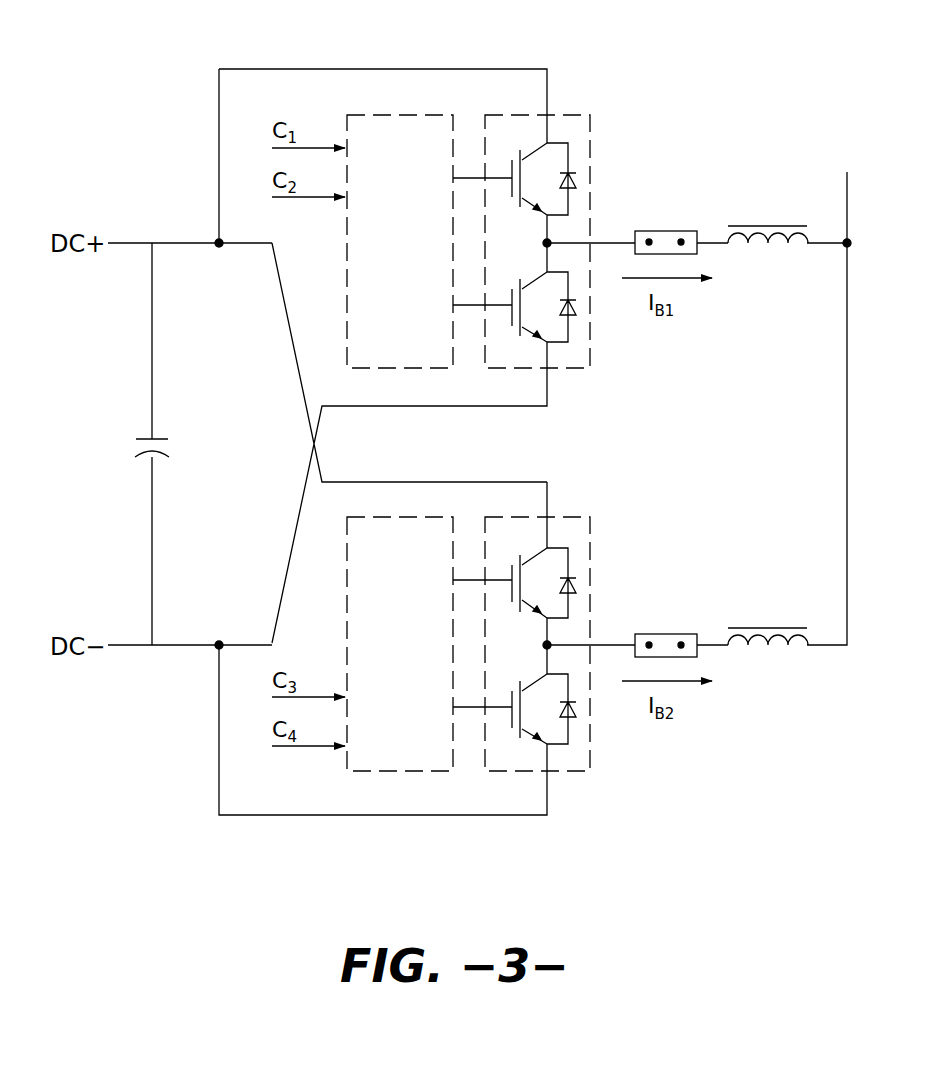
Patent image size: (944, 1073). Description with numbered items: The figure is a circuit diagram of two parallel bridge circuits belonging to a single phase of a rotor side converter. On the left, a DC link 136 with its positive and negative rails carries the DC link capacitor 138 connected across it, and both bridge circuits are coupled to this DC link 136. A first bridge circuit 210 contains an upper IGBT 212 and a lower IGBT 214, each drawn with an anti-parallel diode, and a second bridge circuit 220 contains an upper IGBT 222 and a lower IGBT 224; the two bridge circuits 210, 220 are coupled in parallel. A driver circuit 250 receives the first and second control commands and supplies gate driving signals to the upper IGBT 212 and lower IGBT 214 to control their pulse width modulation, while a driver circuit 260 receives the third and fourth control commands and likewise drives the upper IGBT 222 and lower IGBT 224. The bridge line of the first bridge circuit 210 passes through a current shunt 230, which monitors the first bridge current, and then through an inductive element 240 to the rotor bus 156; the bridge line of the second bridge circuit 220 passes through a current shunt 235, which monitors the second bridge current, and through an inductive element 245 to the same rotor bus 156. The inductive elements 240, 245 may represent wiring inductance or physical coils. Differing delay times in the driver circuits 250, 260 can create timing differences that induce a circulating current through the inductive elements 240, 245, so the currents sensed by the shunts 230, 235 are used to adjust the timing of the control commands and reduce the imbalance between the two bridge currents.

The DC link 136 is at (183, 240).
The DC link capacitor 138 is at (160, 438).
The rotor bus 156 is at (845, 430).
The first bridge circuit 210 is at (592, 123).
The upper IGBT 212 is at (568, 155).
The lower IGBT 214 is at (572, 325).
The second bridge circuit 220 is at (592, 525).
The upper IGBT 222 is at (568, 557).
The lower IGBT 224 is at (572, 727).
The current shunt 230 is at (660, 230).
The current shunt 235 is at (660, 633).
The inductive element 240 is at (783, 252).
The inductive element 245 is at (783, 655).
The driver circuit 250 is at (400, 115).
The driver circuit 260 is at (397, 773).